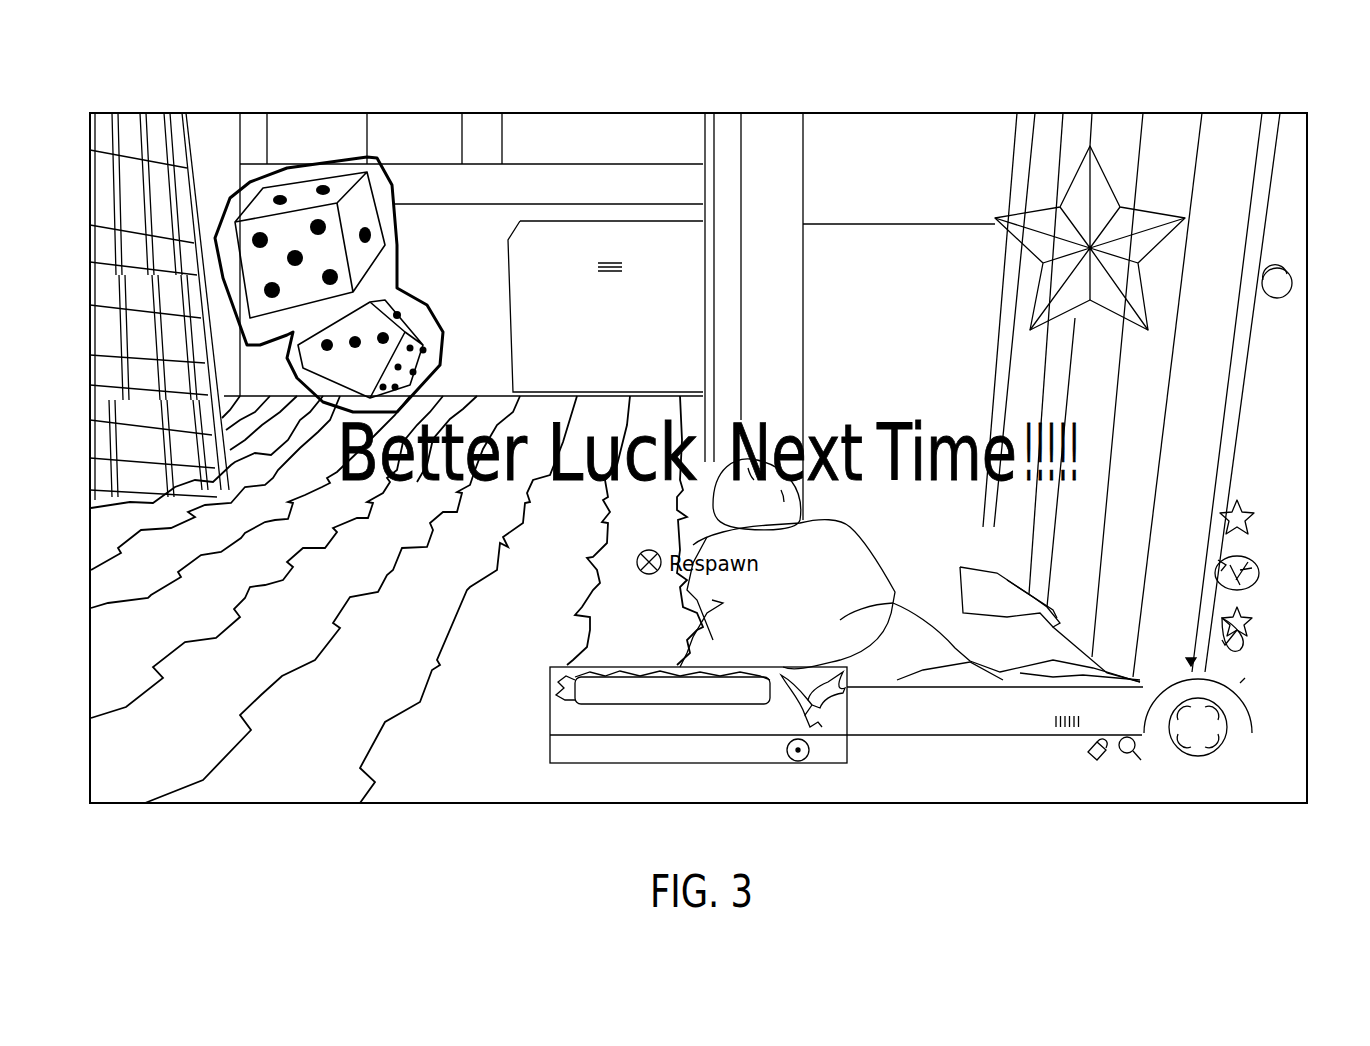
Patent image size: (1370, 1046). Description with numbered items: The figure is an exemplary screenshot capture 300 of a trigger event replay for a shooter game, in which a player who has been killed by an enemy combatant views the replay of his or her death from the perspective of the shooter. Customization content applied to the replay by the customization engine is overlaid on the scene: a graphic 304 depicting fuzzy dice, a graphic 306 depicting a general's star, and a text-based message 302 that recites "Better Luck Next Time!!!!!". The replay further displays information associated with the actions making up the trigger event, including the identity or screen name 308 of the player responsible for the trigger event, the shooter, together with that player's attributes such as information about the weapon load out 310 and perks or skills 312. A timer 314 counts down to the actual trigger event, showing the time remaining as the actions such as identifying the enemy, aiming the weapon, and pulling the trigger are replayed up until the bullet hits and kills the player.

The screenshot capture 300 is at (948, 87).
The text-based message 302 is at (350, 488).
The graphic depicting fuzzy dice 304 is at (303, 163).
The graphic depicting a general's star 306 is at (1100, 162).
The screen name 308 is at (718, 763).
The weapon load out 310 is at (1100, 760).
The perks or skills 312 is at (1270, 520).
The timer 314 is at (672, 148).